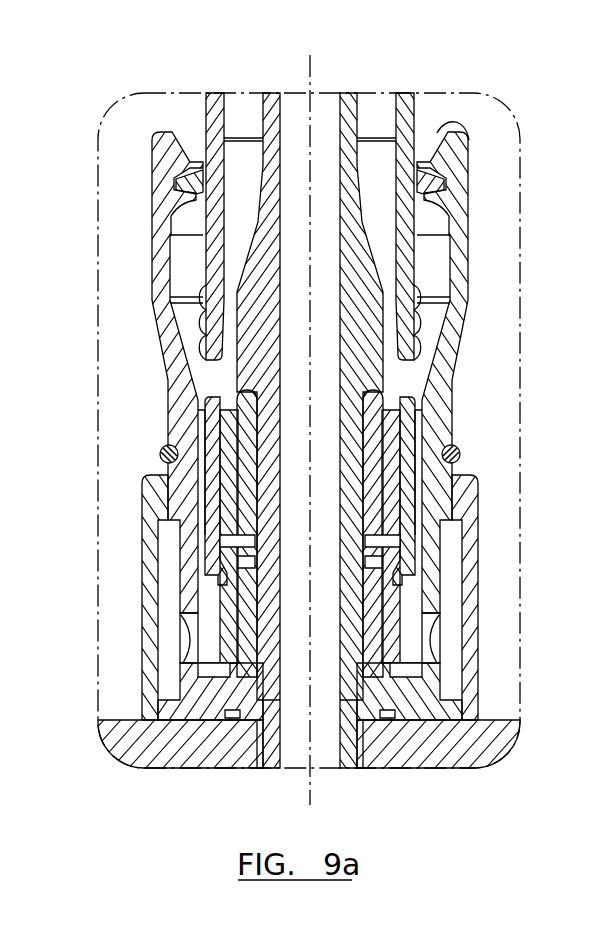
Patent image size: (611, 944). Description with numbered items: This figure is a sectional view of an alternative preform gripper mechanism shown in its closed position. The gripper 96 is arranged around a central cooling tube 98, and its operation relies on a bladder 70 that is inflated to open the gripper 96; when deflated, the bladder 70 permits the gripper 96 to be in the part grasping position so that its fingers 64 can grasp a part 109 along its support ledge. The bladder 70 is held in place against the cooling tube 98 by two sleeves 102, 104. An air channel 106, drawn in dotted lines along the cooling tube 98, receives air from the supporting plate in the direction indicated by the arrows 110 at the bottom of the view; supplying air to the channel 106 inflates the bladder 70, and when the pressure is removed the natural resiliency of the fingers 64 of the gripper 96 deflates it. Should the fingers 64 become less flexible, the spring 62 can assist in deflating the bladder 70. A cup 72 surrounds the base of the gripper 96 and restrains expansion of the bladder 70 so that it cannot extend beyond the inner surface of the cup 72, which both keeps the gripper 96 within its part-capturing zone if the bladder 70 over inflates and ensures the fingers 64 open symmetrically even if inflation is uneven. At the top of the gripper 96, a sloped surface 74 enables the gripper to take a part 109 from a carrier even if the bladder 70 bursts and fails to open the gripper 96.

The cooling tube 98 is at (347, 95).
The part 109 is at (418, 108).
The sloped surface 74 is at (470, 140).
The fingers 64 is at (453, 208).
The gripper 96 is at (470, 283).
The bladder 70 is at (410, 427).
The spring 62 is at (456, 460).
The sleeve 102 is at (410, 500).
The sleeve 104 is at (410, 615).
The cup 72 is at (473, 598).
The arrows 110 is at (357, 775).
The air channel 106 is at (360, 703).